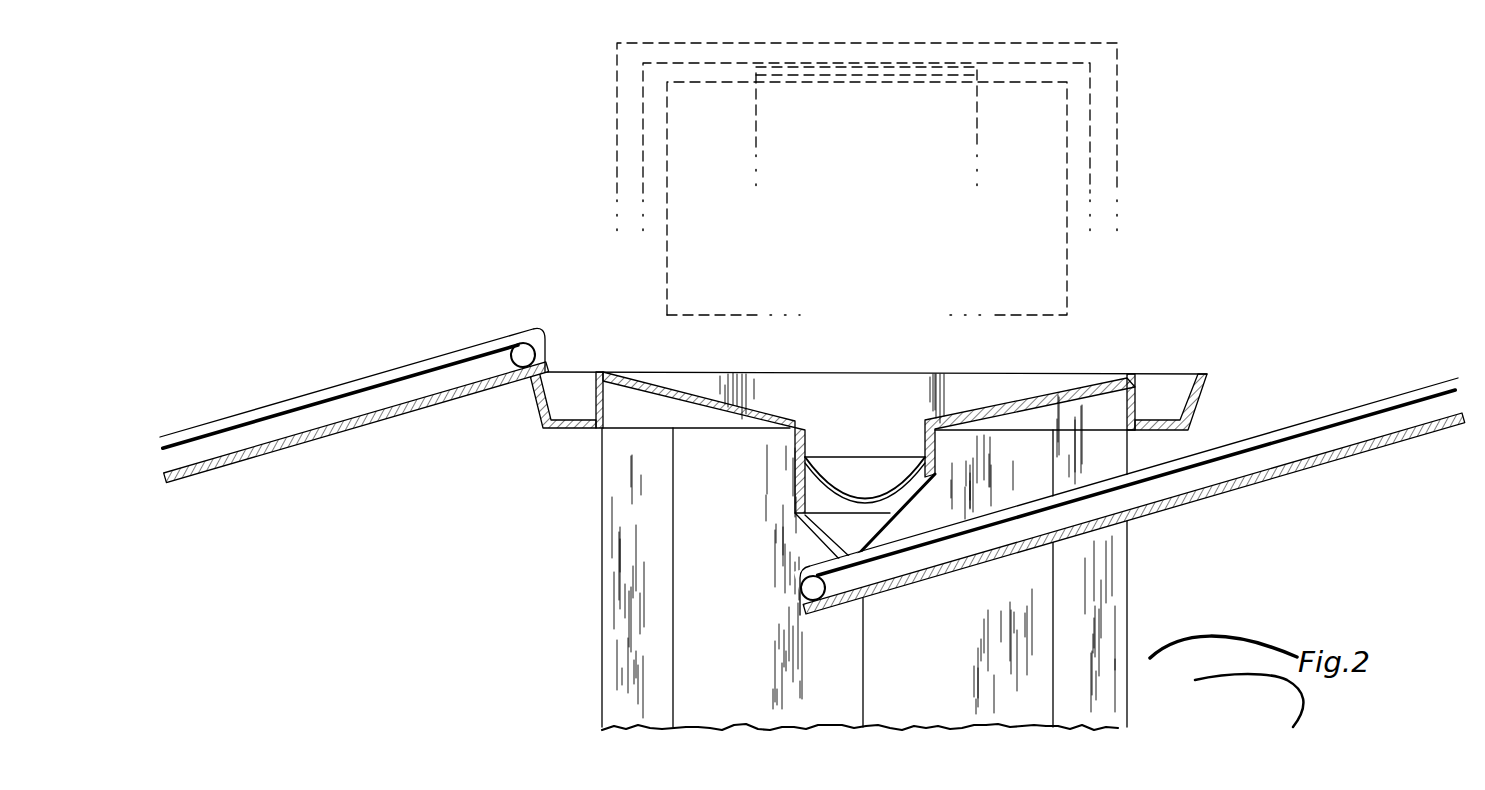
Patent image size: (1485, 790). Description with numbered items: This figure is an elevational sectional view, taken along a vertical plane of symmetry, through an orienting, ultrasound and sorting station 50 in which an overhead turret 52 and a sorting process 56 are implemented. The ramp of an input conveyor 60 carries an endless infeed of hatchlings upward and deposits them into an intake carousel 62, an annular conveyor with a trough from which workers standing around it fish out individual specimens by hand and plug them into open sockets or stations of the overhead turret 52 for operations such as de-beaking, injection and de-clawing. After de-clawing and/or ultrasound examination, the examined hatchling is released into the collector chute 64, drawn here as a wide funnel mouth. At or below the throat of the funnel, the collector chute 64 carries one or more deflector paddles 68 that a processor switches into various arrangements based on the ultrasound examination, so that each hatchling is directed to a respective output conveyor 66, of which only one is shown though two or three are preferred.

The sorting apparatus 50 is at (492, 198).
The overhead turret 52 is at (617, 146).
The sorting process 56 is at (797, 498).
The input conveyor 60 is at (370, 365).
The intake carousel 62 is at (563, 402).
The collector chute 64 is at (960, 400).
The output conveyor 66 is at (1287, 417).
The deflector paddle 68 is at (827, 467).